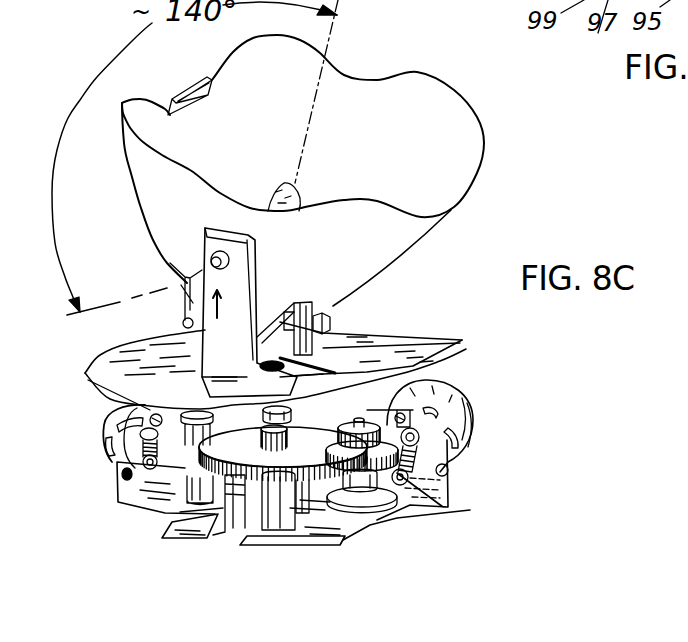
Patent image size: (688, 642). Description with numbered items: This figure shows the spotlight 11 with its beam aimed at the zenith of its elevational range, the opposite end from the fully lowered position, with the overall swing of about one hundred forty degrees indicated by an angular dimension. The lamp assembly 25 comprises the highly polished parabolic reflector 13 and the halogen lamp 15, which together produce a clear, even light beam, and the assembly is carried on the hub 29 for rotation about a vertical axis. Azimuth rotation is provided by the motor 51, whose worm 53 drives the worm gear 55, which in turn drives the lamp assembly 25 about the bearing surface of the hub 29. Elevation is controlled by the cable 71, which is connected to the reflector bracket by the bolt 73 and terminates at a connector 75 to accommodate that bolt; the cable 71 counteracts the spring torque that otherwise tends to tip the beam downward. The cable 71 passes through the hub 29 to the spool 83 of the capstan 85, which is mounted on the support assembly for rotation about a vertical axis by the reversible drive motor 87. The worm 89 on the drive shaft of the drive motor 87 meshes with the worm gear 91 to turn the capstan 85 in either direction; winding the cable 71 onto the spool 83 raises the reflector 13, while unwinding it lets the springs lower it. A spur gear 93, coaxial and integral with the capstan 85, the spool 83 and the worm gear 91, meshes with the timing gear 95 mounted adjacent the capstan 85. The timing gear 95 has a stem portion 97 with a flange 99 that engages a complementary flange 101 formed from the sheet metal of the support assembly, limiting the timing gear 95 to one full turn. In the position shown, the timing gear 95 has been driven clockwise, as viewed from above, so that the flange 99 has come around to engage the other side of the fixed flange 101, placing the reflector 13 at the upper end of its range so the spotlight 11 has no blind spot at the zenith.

The spotlight 11 is at (500, 173).
The parabolic reflector 13 is at (394, 153).
The halogen lamp 15 is at (275, 197).
The lamp assembly 25 is at (345, 303).
The hub 29 is at (288, 420).
The motor 51 is at (106, 414).
The worm 53 is at (142, 458).
The worm gear 55 is at (178, 475).
The cable 71 is at (448, 342).
The bolt 73 is at (332, 320).
The connector 75 is at (407, 333).
The spool 83 is at (420, 508).
The capstan 85 is at (393, 523).
The drive motor 87 is at (453, 396).
The worm 89 is at (457, 475).
The worm gear 91 is at (390, 500).
The spur gear 93 is at (353, 426).
The timing gear 95 is at (293, 514).
The stem portion 97 is at (273, 518).
The flange 99 is at (249, 511).
The complementary flange 101 is at (168, 522).